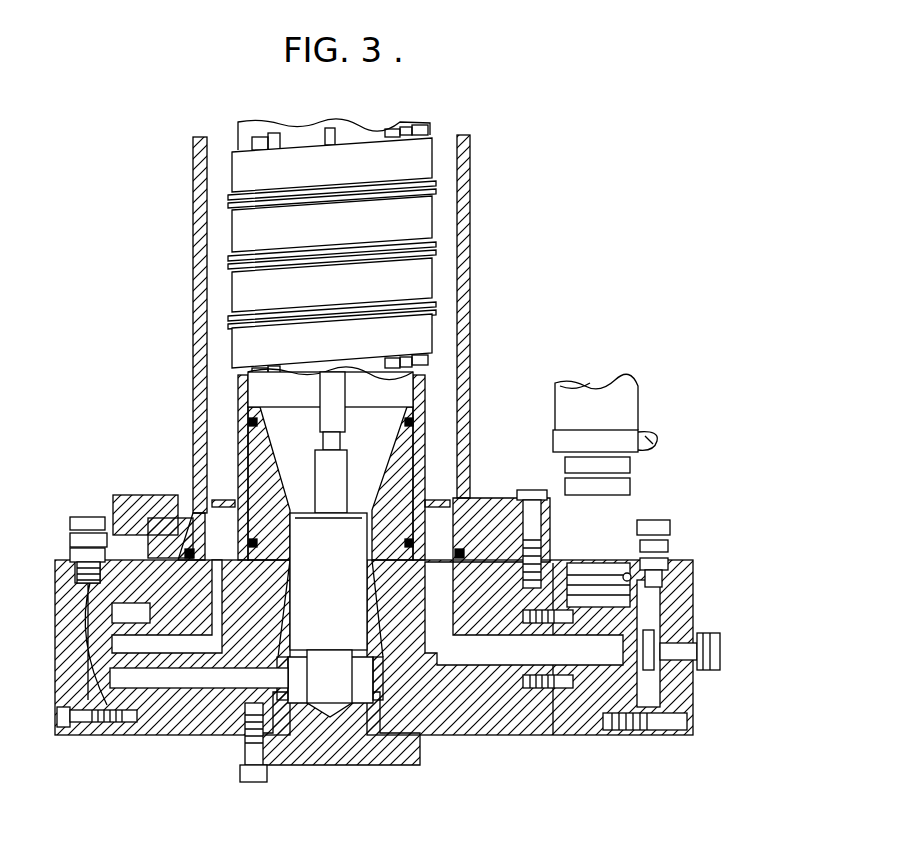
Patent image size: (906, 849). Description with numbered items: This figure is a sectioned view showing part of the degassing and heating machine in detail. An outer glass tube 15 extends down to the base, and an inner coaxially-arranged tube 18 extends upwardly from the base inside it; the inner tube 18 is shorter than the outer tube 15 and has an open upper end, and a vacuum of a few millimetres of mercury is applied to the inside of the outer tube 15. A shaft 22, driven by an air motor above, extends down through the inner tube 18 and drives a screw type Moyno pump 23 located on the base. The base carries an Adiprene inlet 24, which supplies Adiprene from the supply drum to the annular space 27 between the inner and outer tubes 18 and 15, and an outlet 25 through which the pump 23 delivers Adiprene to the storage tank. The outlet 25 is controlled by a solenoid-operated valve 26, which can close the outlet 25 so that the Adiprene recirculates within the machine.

The outer glass tube 15 is at (468, 283).
The inner tube 18 is at (425, 392).
The shaft 22 is at (333, 391).
The screw type Moyno pump 23 is at (343, 530).
The Adiprene inlet 24 is at (588, 570).
The outlet 25 is at (135, 680).
The solenoid-operated valve 26 is at (112, 643).
The annular space 27 is at (447, 185).